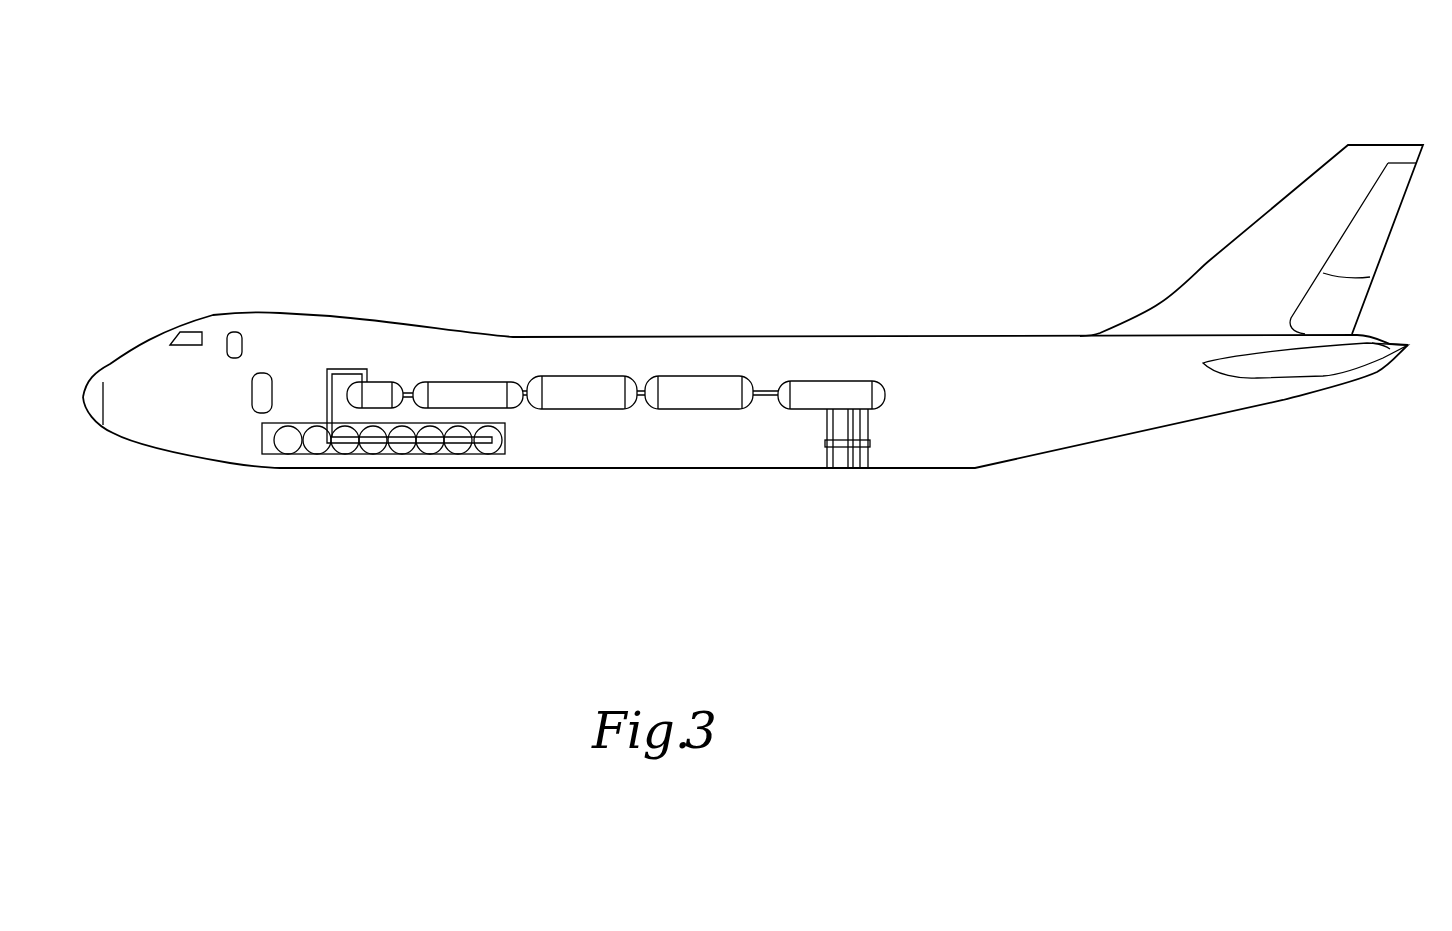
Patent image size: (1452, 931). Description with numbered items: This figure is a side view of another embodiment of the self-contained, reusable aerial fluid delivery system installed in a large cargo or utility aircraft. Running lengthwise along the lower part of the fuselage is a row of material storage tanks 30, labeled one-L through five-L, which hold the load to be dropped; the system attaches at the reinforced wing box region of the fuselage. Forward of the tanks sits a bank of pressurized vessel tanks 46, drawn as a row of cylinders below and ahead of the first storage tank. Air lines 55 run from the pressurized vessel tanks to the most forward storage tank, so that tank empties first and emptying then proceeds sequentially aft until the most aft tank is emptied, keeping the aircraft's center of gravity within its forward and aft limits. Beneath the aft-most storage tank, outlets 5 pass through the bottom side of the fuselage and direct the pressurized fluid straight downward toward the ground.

The air lines 55 is at (335, 368).
The material storage tank 30 is at (383, 382).
The fuel container 46 is at (287, 447).
The outlets 5 is at (843, 462).